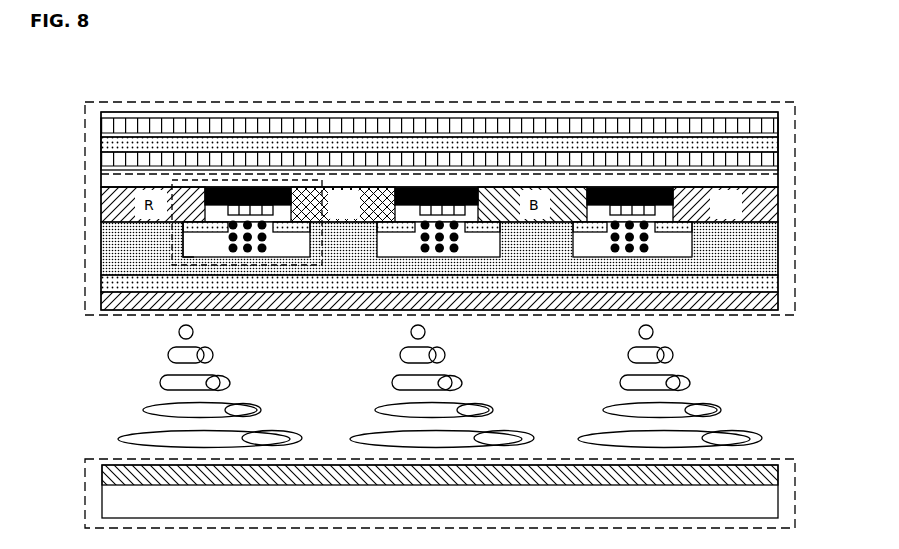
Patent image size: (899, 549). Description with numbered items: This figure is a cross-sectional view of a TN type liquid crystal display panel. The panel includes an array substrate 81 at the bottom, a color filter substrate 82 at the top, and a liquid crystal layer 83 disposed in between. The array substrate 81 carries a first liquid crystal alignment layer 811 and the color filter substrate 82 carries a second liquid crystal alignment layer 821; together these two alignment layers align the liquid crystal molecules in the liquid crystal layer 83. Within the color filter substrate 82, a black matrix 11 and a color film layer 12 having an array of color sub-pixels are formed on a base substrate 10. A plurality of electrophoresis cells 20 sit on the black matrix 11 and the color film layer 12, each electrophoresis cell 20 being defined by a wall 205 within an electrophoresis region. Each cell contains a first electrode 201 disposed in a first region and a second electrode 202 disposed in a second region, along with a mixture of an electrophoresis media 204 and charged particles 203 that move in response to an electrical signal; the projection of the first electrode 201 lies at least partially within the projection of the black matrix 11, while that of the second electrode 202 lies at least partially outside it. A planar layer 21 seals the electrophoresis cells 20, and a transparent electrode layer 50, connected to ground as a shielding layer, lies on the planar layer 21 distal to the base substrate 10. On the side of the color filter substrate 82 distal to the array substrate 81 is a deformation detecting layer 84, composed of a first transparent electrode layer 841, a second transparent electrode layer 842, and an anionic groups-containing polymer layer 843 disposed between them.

The base substrate 10 is at (567, 183).
The black matrix 11 is at (613, 187).
The color film layer 12 is at (697, 188).
The electrophoresis cell 20 is at (285, 180).
The planar layer 21 is at (100, 247).
The transparent electrode layer 50 is at (137, 284).
The array substrate 81 is at (796, 503).
The color filter substrate 82 is at (796, 248).
The liquid crystal layer 83 is at (753, 390).
The deformation detecting layer 84 is at (783, 158).
The first electrode 201 is at (237, 188).
The second electrode 202 is at (303, 187).
The charged particles 203 is at (230, 246).
The electrophoresis media 204 is at (207, 247).
The wall 205 is at (178, 248).
The first liquid crystal alignment layer 811 is at (776, 463).
The second liquid crystal alignment layer 821 is at (762, 310).
The first transparent electrode layer 841 is at (513, 170).
The second transparent electrode layer 842 is at (417, 127).
The anionic groups-containing polymer layer 843 is at (470, 148).